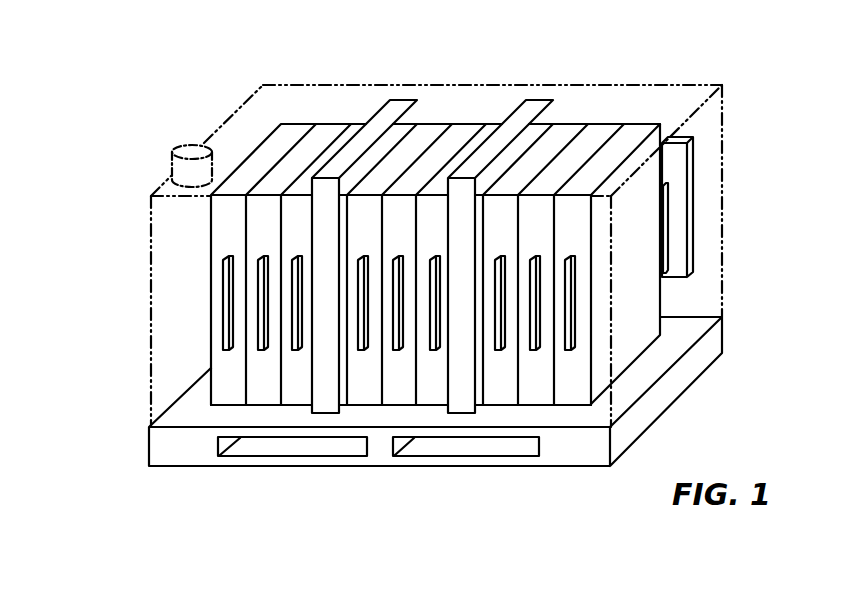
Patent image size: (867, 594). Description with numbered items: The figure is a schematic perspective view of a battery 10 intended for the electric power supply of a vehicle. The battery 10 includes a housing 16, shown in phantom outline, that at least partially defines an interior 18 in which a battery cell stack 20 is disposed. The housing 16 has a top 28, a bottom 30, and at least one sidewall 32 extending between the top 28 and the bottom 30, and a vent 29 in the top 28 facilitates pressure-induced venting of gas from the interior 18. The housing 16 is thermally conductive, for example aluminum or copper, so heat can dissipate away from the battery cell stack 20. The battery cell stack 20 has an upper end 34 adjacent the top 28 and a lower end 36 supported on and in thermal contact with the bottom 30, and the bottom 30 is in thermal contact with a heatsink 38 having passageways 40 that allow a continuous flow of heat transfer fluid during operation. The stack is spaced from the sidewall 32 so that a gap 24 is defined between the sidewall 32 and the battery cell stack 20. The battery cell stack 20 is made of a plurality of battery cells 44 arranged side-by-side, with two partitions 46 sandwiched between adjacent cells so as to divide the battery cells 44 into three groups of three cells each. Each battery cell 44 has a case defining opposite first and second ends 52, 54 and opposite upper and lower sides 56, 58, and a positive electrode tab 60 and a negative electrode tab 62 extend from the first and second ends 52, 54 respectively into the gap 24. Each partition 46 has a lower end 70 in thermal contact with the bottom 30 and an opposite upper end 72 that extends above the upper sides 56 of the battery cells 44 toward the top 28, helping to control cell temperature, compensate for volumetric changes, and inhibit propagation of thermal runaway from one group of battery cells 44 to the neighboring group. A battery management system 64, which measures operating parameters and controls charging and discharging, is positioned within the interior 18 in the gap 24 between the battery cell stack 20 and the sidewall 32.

The battery 10 is at (192, 118).
The housing 16 is at (150, 307).
The interior 18 is at (254, 114).
The battery cell stack 20 is at (444, 114).
The gap 24 is at (175, 358).
The top 28 is at (587, 83).
The vent 29 is at (173, 158).
The bottom 30 is at (723, 327).
The sidewall 32 is at (722, 110).
The upper end 34 is at (333, 114).
The lower end 36 is at (567, 418).
The heatsink 38 is at (427, 467).
The passageways 40 is at (282, 458).
The battery cells 44 is at (287, 125).
The partitions 46 is at (535, 98).
The first end 52 is at (208, 245).
The second end 54 is at (676, 302).
The upper sides 56 is at (651, 114).
The lower sides 58 is at (204, 417).
The positive electrode tab 60 is at (575, 332).
The negative electrode tab 62 is at (665, 220).
The battery management system 64 is at (693, 163).
The lower end 70 is at (329, 426).
The upper end 72 is at (394, 82).